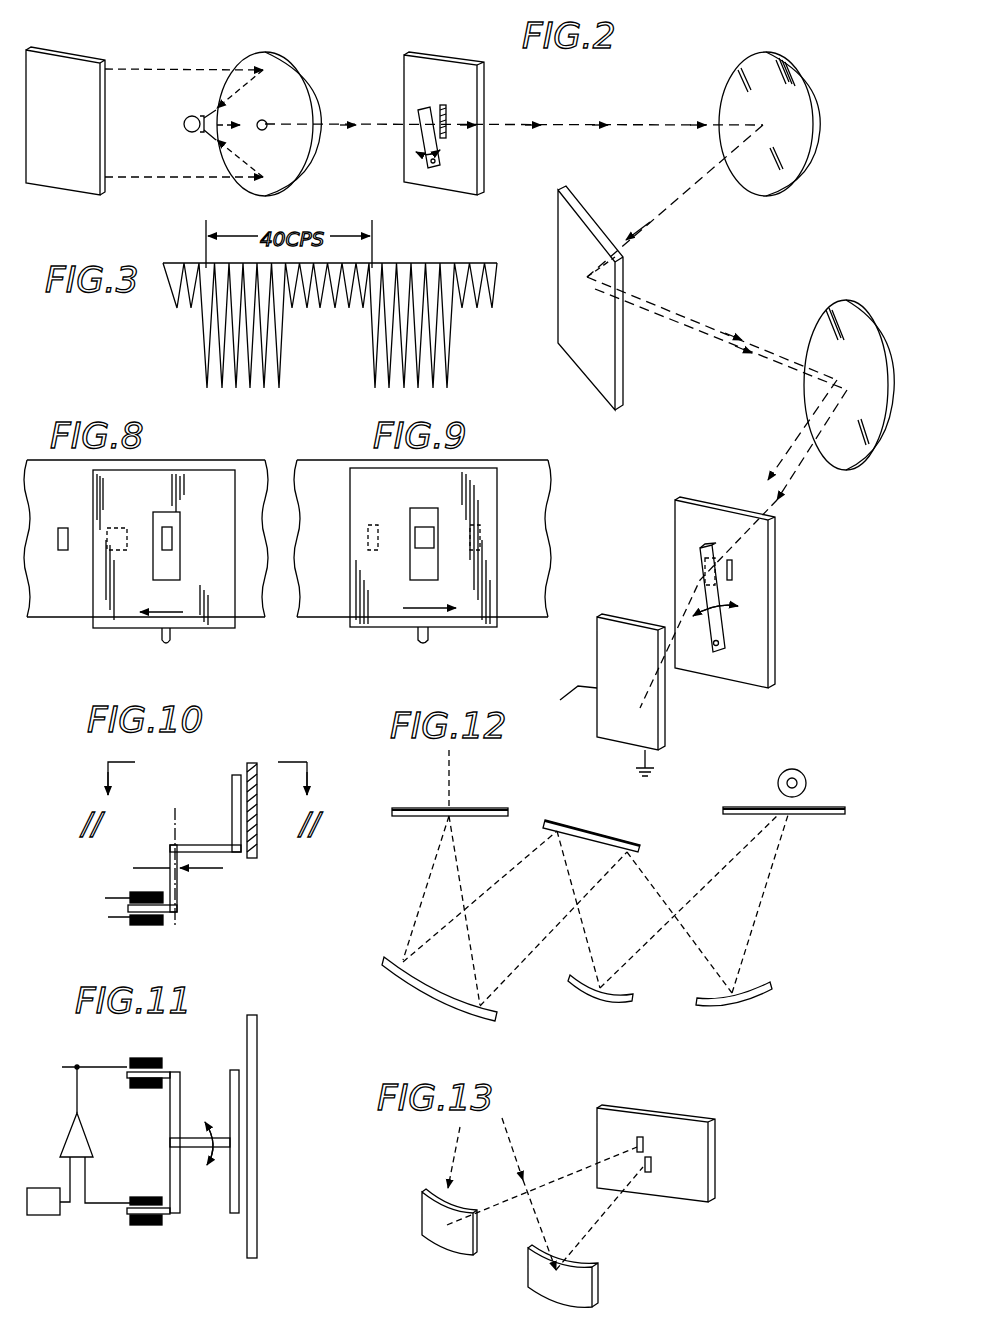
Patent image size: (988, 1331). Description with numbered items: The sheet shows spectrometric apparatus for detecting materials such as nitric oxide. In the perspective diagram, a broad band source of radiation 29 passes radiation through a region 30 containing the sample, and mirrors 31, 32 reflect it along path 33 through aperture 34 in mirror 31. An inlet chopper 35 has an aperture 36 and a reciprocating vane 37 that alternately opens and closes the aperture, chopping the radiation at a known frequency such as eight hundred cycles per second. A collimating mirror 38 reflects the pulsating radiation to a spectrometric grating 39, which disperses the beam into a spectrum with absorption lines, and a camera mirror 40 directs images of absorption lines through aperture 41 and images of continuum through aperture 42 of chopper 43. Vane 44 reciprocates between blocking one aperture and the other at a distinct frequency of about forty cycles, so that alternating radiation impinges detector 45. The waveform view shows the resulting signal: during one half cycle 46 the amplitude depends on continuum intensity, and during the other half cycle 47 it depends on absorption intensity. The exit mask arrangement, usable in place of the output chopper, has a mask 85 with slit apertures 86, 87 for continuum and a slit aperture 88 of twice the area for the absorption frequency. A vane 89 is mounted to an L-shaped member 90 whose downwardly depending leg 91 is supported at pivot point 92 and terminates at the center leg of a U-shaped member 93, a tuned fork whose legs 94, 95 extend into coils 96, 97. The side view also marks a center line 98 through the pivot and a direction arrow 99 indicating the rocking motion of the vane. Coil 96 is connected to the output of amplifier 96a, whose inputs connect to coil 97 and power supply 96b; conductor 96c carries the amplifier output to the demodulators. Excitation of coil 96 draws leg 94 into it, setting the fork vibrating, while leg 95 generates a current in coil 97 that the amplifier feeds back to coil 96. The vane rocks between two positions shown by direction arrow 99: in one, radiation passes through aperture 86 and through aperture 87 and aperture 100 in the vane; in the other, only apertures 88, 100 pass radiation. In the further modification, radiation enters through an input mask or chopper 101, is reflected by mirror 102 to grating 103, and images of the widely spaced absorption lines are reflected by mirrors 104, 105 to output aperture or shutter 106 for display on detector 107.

In FIG. 2, the broad band source of radiation 29 is at (66, 197).
In FIG. 2, the region 30 is at (150, 135).
In FIG. 2, the mirror 31 is at (306, 80).
In FIG. 2, the mirror 32 is at (190, 134).
In FIG. 2, the path 33 is at (332, 125).
In FIG. 2, the aperture 34 is at (262, 130).
In FIG. 2, the inlet chopper 35 is at (484, 155).
In FIG. 2, the aperture 36 is at (440, 108).
In FIG. 2, the vane 37 is at (418, 140).
In FIG. 2, the collimating mirror 38 is at (748, 195).
In FIG. 2, the spectrometric grating 39 is at (617, 395).
In FIG. 2, the camera mirror 40 is at (840, 464).
In FIG. 2, the aperture 41 is at (705, 568).
In FIG. 2, the aperture 42 is at (733, 576).
In FIG. 2, the chopper 43 is at (776, 632).
In FIG. 2, the vane 44 is at (728, 640).
In FIG. 2, the detector 45 is at (660, 735).
In FIG. 3, the half cycle 46 is at (342, 375).
In FIG. 3, the half cycle 47 is at (418, 252).
In FIG. 8, the mask 85 is at (70, 620).
In FIG. 9, the mask 85 is at (330, 620).
In FIG. 10, the mask 85 is at (257, 855).
In FIG. 11, the mask 85 is at (258, 1036).
In FIG. 8, the slit aperture 86 is at (66, 526).
In FIG. 9, the slit aperture 86 is at (368, 540).
In FIG. 8, the slit aperture 87 is at (172, 538).
In FIG. 9, the slit aperture 87 is at (481, 535).
In FIG. 8, the slit aperture 88 is at (125, 528).
In FIG. 9, the slit aperture 88 is at (426, 527).
In FIG. 8, the vane 89 is at (188, 630).
In FIG. 9, the vane 89 is at (405, 630).
In FIG. 10, the vane 89 is at (232, 788).
In FIG. 11, the vane 89 is at (239, 1101).
In FIG. 8, the L-shaped member 90 is at (160, 640).
In FIG. 9, the L-shaped member 90 is at (430, 640).
In FIG. 10, the L-shaped member 90 is at (216, 830).
In FIG. 11, the L-shaped member 90 is at (196, 1138).
In FIG. 10, the leg 91 is at (170, 862).
In FIG. 10, the pivot point 92 is at (186, 870).
In FIG. 10, the U-shaped member 93 is at (177, 912).
In FIG. 11, the U-shaped member 93 is at (170, 1176).
In FIG. 11, the leg 94 is at (172, 1072).
In FIG. 10, the leg 95 is at (130, 920).
In FIG. 11, the leg 95 is at (165, 1216).
In FIG. 11, the coil 96 is at (153, 1044).
In FIG. 11, the amplifier 96a is at (89, 1140).
In FIG. 11, the power supply 96b is at (52, 1172).
In FIG. 11, the conductor 96c is at (77, 1066).
In FIG. 10, the coil 97 is at (145, 927).
In FIG. 11, the coil 97 is at (136, 1226).
In FIG. 10, the center line 98 is at (174, 826).
In FIG. 8, the direction arrow 99 is at (166, 608).
In FIG. 9, the direction arrow 99 is at (420, 608).
In FIG. 11, the direction arrow 99 is at (200, 1165).
In FIG. 8, the aperture 100 is at (175, 565).
In FIG. 9, the aperture 100 is at (418, 575).
In FIG. 12, the input mask or chopper 101 is at (470, 808).
In FIG. 12, the mirror 102 is at (440, 1012).
In FIG. 12, the grating 103 is at (605, 841).
In FIG. 12, the mirror 104 is at (602, 1000).
In FIG. 13, the mirror 104 is at (446, 1245).
In FIG. 12, the mirror 105 is at (736, 1000).
In FIG. 13, the mirror 105 is at (550, 1292).
In FIG. 12, the output aperture or shutter 106 is at (815, 815).
In FIG. 13, the output aperture or shutter 106 is at (716, 1162).
In FIG. 12, the detector 107 is at (806, 780).